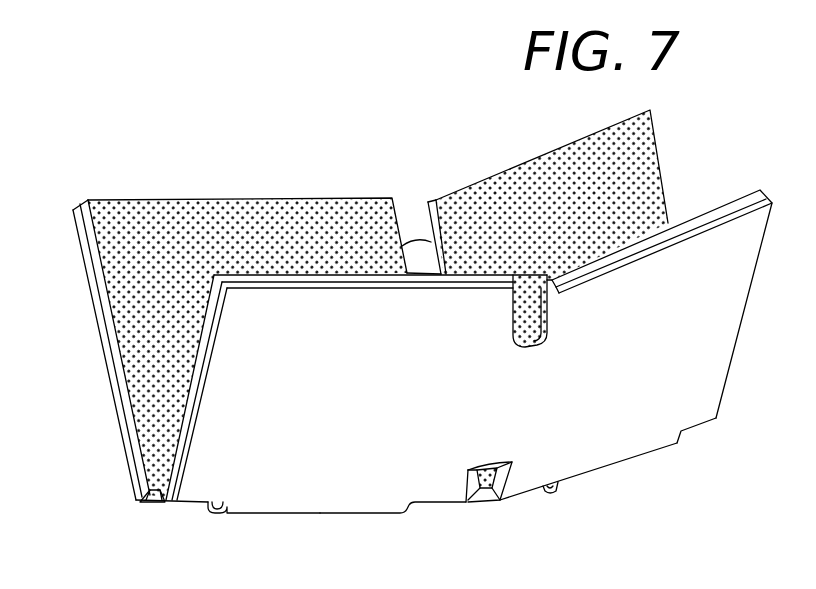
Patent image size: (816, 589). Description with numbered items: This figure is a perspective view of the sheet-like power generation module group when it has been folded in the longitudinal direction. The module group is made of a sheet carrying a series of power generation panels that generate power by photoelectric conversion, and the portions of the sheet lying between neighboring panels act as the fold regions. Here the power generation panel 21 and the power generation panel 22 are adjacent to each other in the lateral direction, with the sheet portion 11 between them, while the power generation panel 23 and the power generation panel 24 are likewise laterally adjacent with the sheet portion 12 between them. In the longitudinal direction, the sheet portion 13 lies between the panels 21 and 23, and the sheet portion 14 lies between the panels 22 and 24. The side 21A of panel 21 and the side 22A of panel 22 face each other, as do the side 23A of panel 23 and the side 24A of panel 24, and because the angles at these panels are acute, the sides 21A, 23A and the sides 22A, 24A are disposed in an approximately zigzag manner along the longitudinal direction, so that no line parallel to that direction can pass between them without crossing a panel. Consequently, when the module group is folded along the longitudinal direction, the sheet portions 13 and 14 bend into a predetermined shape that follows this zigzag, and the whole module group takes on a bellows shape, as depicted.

The sheet portion 11 is at (368, 513).
The sheet portion 12 is at (632, 462).
The sheet portion 13 is at (508, 420).
The sheet portion 14 is at (425, 263).
The power generation panel 21 is at (198, 382).
The side 21A is at (283, 500).
The power generation panel 22 is at (240, 212).
The side 22A is at (157, 503).
The power generation panel 23 is at (735, 203).
The side 23A is at (698, 429).
The power generation panel 24 is at (537, 167).
The side 24A is at (488, 488).